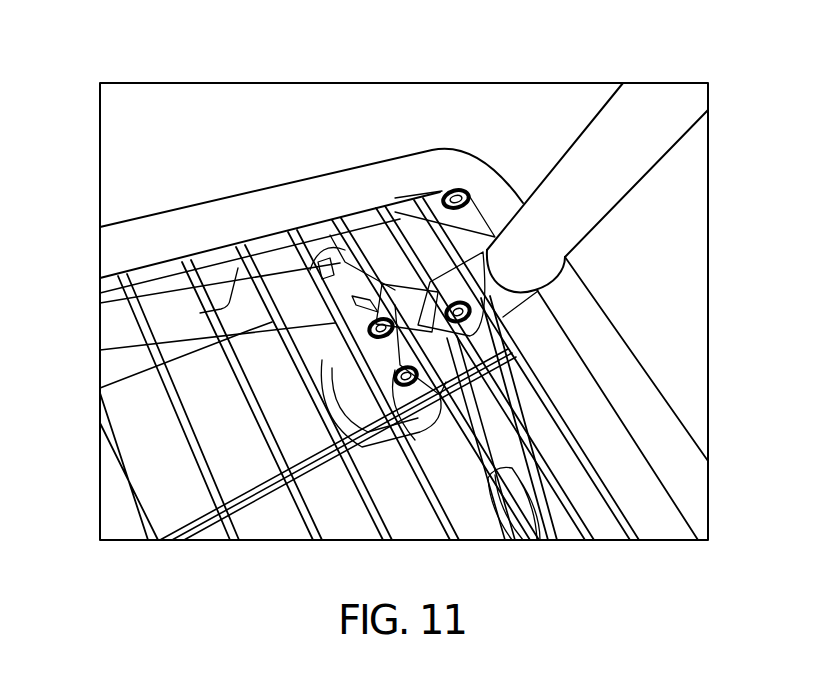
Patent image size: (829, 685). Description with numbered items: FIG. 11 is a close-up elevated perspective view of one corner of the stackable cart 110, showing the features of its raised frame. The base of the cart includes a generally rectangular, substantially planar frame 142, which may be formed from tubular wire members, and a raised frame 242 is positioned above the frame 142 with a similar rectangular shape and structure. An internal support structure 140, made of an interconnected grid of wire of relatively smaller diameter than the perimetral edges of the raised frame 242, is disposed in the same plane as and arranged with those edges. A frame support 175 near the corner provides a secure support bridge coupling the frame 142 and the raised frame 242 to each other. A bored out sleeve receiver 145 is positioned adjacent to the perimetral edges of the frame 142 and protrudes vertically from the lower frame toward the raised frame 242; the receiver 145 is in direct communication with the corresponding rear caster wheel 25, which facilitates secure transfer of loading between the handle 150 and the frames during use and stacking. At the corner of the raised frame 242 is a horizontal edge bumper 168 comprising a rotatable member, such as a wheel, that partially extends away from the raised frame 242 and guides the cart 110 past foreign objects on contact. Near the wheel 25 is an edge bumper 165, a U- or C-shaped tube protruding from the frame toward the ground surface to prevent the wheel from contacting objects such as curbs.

The stackable cart 110 is at (84, 47).
The raised frame 242 is at (480, 160).
The frame support 175 is at (283, 300).
The frame 142 is at (113, 366).
The internal support structure 140 is at (192, 443).
The handle 150 is at (672, 120).
The bored out sleeve receiver 145 is at (503, 312).
The horizontal edge bumper 168 is at (418, 225).
The rear caster wheel 25 is at (447, 440).
The edge bumper 165 is at (517, 518).